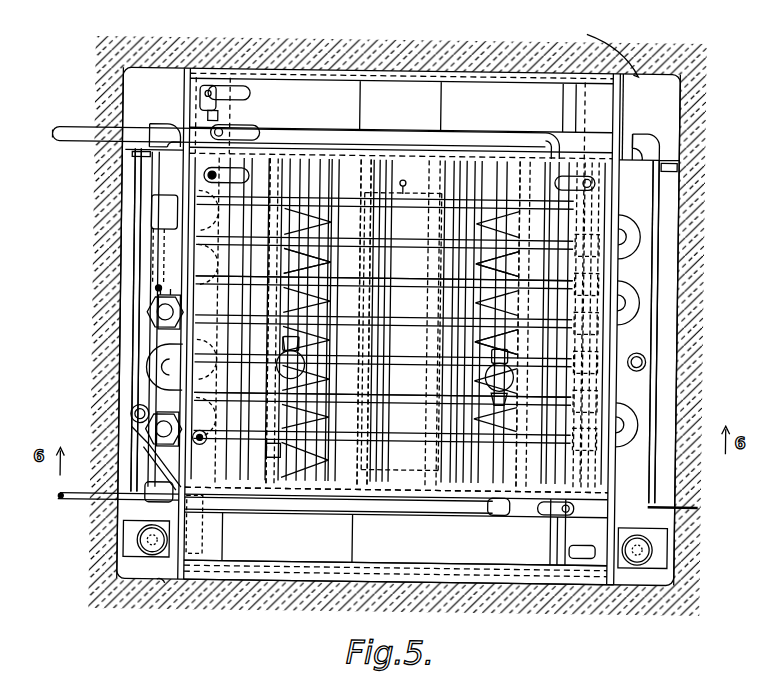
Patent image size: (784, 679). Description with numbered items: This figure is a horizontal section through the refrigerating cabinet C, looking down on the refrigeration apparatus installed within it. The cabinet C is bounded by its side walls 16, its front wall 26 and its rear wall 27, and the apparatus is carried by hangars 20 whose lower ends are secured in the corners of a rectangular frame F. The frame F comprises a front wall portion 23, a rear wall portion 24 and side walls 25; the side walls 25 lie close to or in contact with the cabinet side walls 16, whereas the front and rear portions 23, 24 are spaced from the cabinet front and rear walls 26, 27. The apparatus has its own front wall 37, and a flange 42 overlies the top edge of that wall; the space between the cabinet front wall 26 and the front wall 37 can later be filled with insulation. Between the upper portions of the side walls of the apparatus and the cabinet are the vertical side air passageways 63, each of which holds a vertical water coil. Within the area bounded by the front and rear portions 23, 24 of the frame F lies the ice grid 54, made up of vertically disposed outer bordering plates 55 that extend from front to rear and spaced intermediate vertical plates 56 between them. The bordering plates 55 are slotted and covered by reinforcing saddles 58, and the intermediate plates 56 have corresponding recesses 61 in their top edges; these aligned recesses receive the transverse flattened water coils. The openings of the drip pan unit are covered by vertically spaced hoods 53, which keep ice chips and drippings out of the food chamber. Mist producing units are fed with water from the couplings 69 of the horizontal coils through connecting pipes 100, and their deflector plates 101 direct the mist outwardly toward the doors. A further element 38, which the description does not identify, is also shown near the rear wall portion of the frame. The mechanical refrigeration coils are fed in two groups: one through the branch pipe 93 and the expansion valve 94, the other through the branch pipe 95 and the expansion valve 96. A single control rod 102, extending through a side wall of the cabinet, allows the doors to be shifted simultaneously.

The rear wall 27 is at (601, 47).
The vertical side air passageway 63 is at (662, 110).
The rear wall portion 24 is at (660, 158).
The hangar 20 is at (668, 176).
The frame F is at (660, 205).
The side wall 25 is at (668, 228).
The side wall 16 is at (680, 315).
The branch pipe 93 is at (648, 368).
The front wall 26 is at (545, 400).
The control rod 102 is at (700, 504).
The expansion valve 94 is at (656, 556).
The flange 42 is at (545, 583).
The front wall 37 is at (440, 567).
The outer bordering plate 55 is at (508, 514).
The front wall portion 23 is at (480, 490).
The connecting pipe 100 is at (292, 137).
The motor 38 is at (320, 82).
The reinforcing saddle 58 is at (278, 176).
The intermediate vertical plate 56 is at (440, 172).
The recess 61 is at (322, 263).
The hood 53 is at (392, 241).
The ice grid 54 is at (483, 262).
The deflector plate 101 is at (308, 368).
The coupling 69 is at (150, 320).
The branch pipe 95 is at (131, 414).
The expansion valve 96 is at (138, 545).
The cabinet C is at (130, 289).